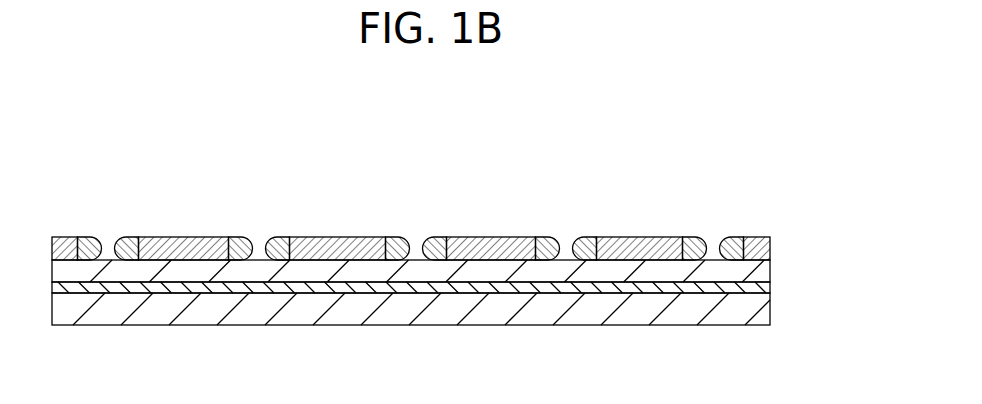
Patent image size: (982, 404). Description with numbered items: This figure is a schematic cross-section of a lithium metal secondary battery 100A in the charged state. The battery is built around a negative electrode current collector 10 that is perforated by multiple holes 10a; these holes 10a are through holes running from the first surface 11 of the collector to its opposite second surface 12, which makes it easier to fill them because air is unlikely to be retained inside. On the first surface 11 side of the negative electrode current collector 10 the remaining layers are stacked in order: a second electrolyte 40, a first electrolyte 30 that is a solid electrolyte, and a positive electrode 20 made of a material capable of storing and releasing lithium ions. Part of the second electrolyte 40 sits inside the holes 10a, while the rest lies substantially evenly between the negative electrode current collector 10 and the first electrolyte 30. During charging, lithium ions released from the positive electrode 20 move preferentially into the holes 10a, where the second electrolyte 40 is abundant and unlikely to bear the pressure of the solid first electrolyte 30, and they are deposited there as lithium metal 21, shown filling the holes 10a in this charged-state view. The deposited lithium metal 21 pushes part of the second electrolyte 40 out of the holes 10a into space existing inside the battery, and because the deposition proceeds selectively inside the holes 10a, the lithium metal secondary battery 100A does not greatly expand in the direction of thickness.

The lithium metal secondary battery 100A is at (460, 117).
The negative electrode current collector 10 is at (764, 250).
The holes 10a is at (110, 248).
The first surface 11 is at (185, 277).
The second surface 12 is at (190, 222).
The positive electrode 20 is at (757, 312).
The lithium metal 21 is at (93, 242).
The first electrolyte 30 is at (757, 288).
The second electrolyte 40 is at (762, 273).